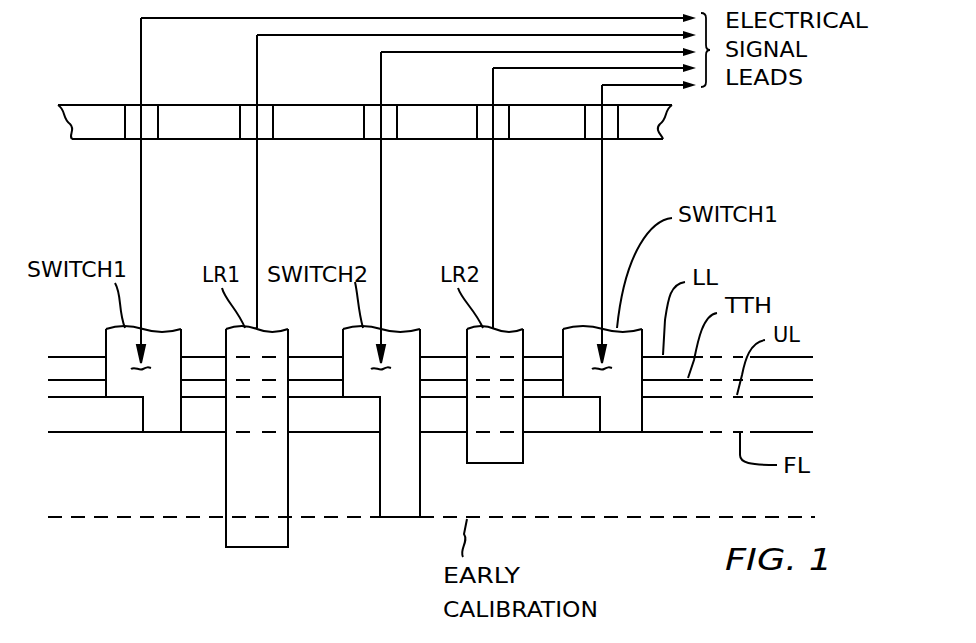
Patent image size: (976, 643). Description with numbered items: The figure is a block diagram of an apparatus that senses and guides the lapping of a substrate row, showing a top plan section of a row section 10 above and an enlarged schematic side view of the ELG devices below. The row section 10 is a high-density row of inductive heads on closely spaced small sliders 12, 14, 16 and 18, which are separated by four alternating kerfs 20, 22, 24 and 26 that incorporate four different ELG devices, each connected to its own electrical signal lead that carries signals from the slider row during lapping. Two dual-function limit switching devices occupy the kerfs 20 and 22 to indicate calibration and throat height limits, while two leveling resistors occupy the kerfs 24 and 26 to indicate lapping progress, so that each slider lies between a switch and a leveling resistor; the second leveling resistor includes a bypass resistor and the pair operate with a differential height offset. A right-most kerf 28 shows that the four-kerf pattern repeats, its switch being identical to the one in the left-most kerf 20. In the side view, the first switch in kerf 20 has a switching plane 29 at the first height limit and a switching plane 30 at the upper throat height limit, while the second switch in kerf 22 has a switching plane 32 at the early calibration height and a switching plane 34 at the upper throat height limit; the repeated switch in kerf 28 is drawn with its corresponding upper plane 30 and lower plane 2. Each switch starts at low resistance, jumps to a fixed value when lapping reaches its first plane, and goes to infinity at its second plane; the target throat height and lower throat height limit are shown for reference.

The row section 10 is at (63, 124).
The slider 18 is at (83, 137).
The kerf 20 is at (148, 112).
The slider 12 is at (178, 137).
The kerf 24 is at (248, 112).
The slider 14 is at (316, 137).
The kerf 22 is at (372, 110).
The slider 16 is at (432, 137).
The kerf 26 is at (485, 110).
The right-most kerf 28 is at (611, 137).
The switching plane 30 is at (119, 399).
The switching plane 29 is at (165, 434).
The switching plane 34 is at (358, 399).
The switching plane 32 is at (403, 519).
The switch output 2 is at (623, 434).